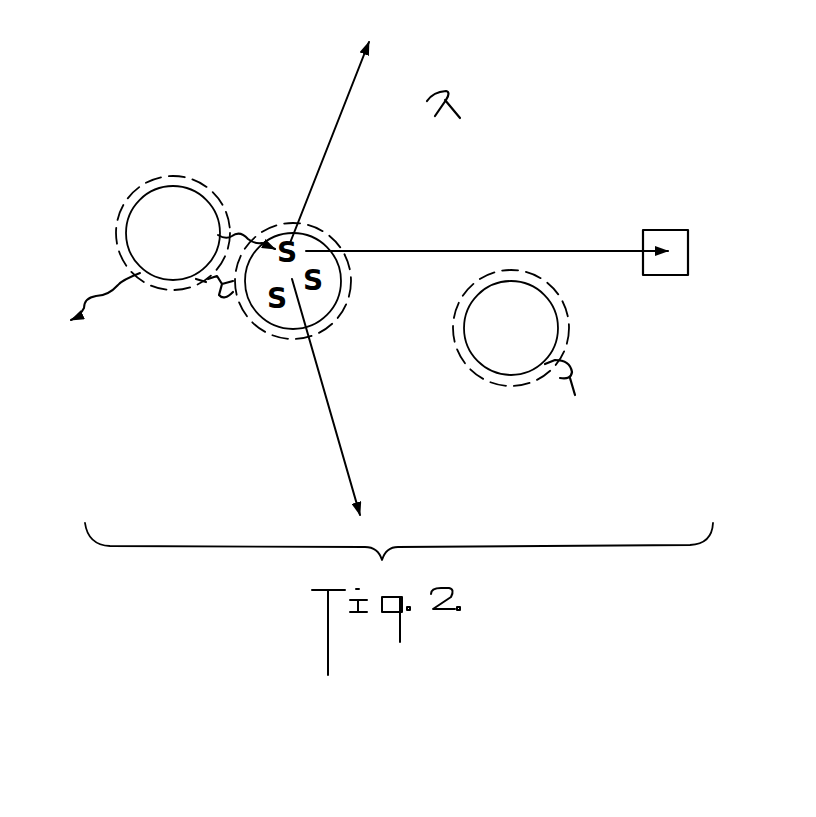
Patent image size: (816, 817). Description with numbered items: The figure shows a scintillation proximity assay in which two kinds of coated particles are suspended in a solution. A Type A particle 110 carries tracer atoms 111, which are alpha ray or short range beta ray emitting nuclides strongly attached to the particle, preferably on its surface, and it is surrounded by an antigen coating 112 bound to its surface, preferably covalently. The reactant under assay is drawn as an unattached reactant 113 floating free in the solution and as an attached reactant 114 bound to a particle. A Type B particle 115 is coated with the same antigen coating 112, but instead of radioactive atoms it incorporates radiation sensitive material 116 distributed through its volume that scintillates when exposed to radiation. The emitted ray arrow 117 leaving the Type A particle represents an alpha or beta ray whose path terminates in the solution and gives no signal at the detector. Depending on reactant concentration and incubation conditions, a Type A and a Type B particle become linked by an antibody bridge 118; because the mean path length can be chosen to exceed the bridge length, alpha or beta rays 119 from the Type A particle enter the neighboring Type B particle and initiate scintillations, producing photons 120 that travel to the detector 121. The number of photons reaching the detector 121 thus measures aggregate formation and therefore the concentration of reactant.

The Type A particle 110 is at (175, 192).
The tracer atoms 111 is at (145, 208).
The antigen coating 112 is at (117, 245).
The reactant under assay 113 is at (453, 98).
The attached reactant 114 is at (575, 375).
The Type B particle 115 is at (543, 345).
The radiation sensitive material 116 is at (500, 355).
The emitted ray arrow 117 is at (93, 293).
The antibody bridge 118 is at (220, 300).
The alpha or beta rays 119 is at (240, 230).
The photons 120 is at (338, 428).
The detector 121 is at (667, 227).